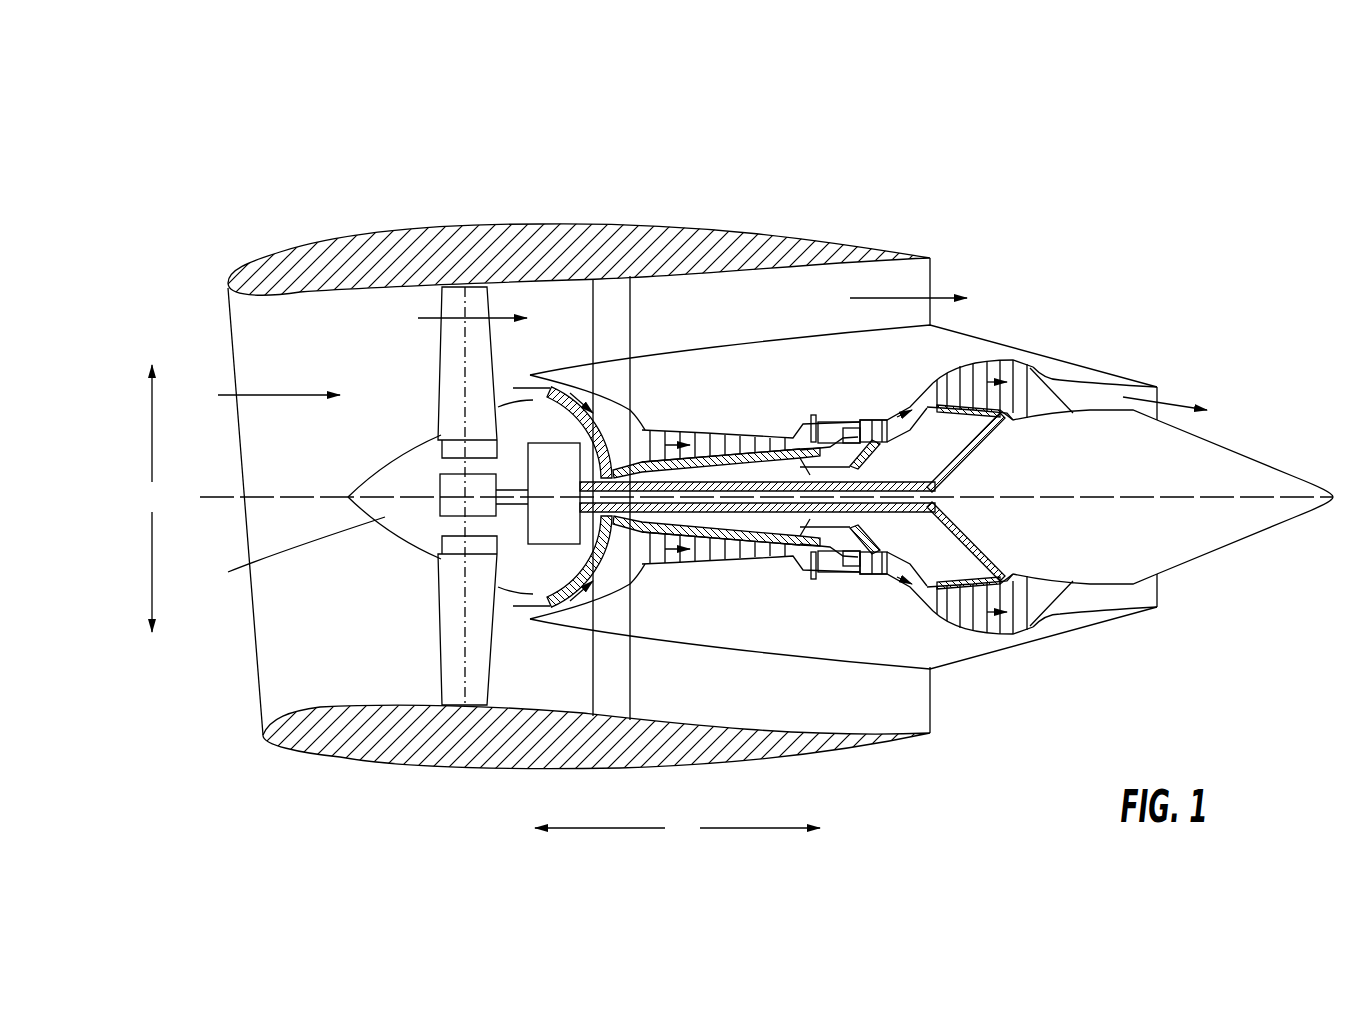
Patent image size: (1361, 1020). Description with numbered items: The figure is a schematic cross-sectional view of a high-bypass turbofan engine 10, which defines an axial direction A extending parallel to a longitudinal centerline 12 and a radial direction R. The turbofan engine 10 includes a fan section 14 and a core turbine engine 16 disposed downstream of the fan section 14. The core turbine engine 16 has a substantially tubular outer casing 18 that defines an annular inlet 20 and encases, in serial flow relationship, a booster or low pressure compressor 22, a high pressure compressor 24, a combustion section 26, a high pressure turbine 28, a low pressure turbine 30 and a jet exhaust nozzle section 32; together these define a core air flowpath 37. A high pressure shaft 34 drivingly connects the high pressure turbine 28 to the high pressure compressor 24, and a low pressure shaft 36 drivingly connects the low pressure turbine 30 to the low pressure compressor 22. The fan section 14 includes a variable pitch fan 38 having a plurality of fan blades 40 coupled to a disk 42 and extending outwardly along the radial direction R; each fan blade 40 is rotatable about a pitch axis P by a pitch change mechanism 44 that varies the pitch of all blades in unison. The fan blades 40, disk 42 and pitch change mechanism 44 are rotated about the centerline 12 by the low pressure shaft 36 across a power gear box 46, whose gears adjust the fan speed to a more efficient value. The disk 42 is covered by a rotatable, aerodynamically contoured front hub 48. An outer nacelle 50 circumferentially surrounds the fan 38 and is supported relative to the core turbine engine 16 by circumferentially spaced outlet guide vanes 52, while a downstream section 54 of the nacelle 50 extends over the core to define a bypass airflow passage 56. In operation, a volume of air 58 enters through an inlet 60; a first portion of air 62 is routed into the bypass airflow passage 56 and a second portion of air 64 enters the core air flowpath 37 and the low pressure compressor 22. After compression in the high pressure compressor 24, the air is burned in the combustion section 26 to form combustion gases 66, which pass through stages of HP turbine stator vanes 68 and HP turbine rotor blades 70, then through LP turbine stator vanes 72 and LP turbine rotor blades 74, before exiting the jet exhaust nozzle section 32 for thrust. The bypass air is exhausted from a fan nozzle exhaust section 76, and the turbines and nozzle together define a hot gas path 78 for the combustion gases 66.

The turbofan engine 10 is at (1075, 240).
The longitudinal centerline 12 is at (1100, 497).
The fan section 14 is at (398, 312).
The core turbine engine 16 is at (750, 383).
The outer casing 18 is at (787, 660).
The annular inlet 20 is at (533, 604).
The low pressure compressor 22 is at (590, 547).
The high pressure compressor 24 is at (658, 550).
The combustion section 26 is at (832, 572).
The high pressure turbine 28 is at (930, 583).
The low pressure turbine 30 is at (1015, 622).
The jet exhaust nozzle section 32 is at (1073, 605).
The high pressure shaft 34 is at (877, 460).
The low pressure shaft 36 is at (945, 468).
The core air flowpath 37 is at (623, 560).
The variable pitch fan 38 is at (410, 548).
The fan blades 40 is at (440, 648).
The disk 42 is at (457, 450).
The pitch change mechanism 44 is at (438, 480).
The power gear box 46 is at (567, 462).
The front hub 48 is at (248, 565).
The outer nacelle 50 is at (488, 771).
The outlet guide vanes 52 is at (630, 303).
The downstream section of the nacelle 54 is at (880, 250).
The bypass airflow passage 56 is at (776, 317).
The volume of air 58 is at (280, 395).
The inlet 60 is at (258, 708).
The first portion of air 62 is at (455, 322).
The second portion of air 64 is at (523, 385).
The combustion gases 66 is at (975, 376).
The HP turbine stator vanes 68 is at (847, 580).
The HP turbine rotor blades 70 is at (935, 537).
The LP turbine stator vanes 72 is at (933, 610).
The LP turbine rotor blades 74 is at (953, 621).
The fan nozzle exhaust section 76 is at (920, 286).
The hot gas path 78 is at (920, 403).
The pitch axis P is at (467, 303).
The radial direction R is at (152, 498).
The axial direction A is at (677, 828).